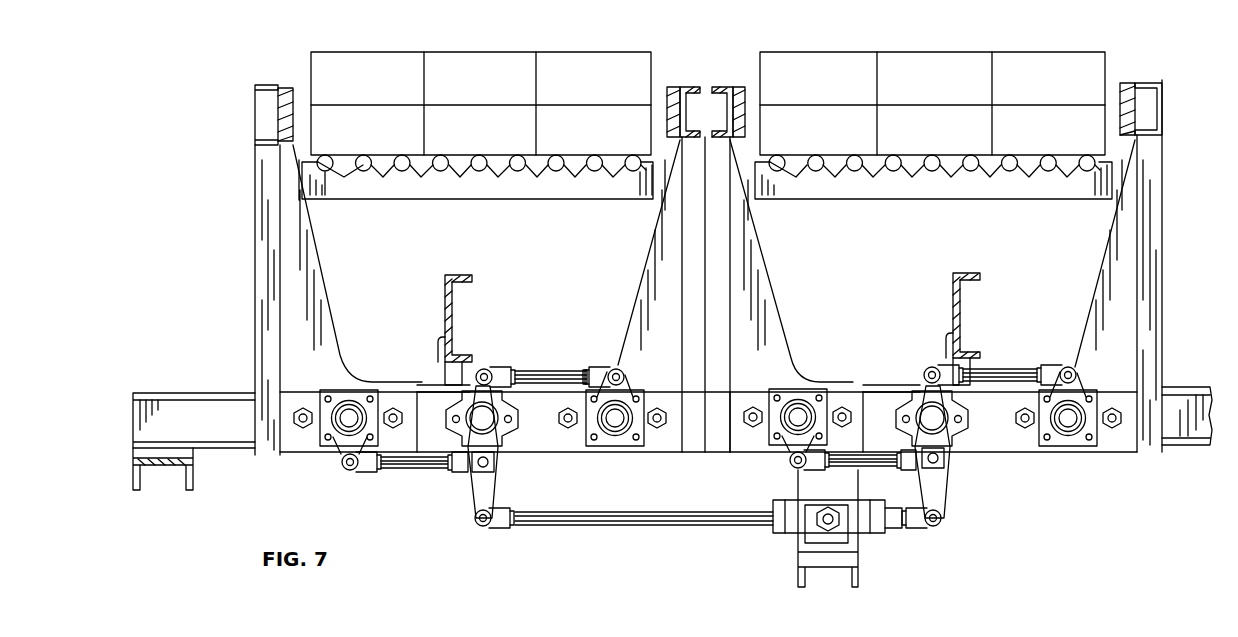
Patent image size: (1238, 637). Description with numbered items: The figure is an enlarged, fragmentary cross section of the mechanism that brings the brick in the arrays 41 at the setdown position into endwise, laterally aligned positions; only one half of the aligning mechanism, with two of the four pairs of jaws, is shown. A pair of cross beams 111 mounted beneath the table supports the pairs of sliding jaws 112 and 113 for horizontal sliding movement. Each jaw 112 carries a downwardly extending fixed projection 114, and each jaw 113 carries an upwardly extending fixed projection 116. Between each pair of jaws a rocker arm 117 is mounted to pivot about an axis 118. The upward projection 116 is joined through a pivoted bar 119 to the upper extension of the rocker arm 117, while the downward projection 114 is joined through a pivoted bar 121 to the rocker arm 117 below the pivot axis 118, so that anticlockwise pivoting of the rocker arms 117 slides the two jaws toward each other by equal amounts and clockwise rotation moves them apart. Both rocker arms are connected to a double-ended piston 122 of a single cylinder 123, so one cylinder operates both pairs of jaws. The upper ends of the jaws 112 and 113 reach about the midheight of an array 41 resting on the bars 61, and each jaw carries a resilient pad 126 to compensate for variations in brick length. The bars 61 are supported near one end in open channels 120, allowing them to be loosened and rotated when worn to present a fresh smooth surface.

The array 41 is at (447, 52).
The bar 61 is at (443, 173).
The cross beam 111 is at (170, 392).
The sliding jaw 112 is at (312, 285).
The sliding jaw 113 is at (657, 263).
The downwardly extending fixed projection 114 is at (347, 438).
The upwardly extending fixed projection 116 is at (621, 393).
The rocker arm 117 is at (488, 482).
The pivot axis 118 is at (478, 412).
The pivoted bar 119 is at (561, 371).
The open channel 120 is at (486, 155).
The pivoted bar 121 is at (413, 462).
The double-ended piston 122 is at (673, 518).
The cylinder 123 is at (876, 526).
The resilient pad 126 is at (292, 87).